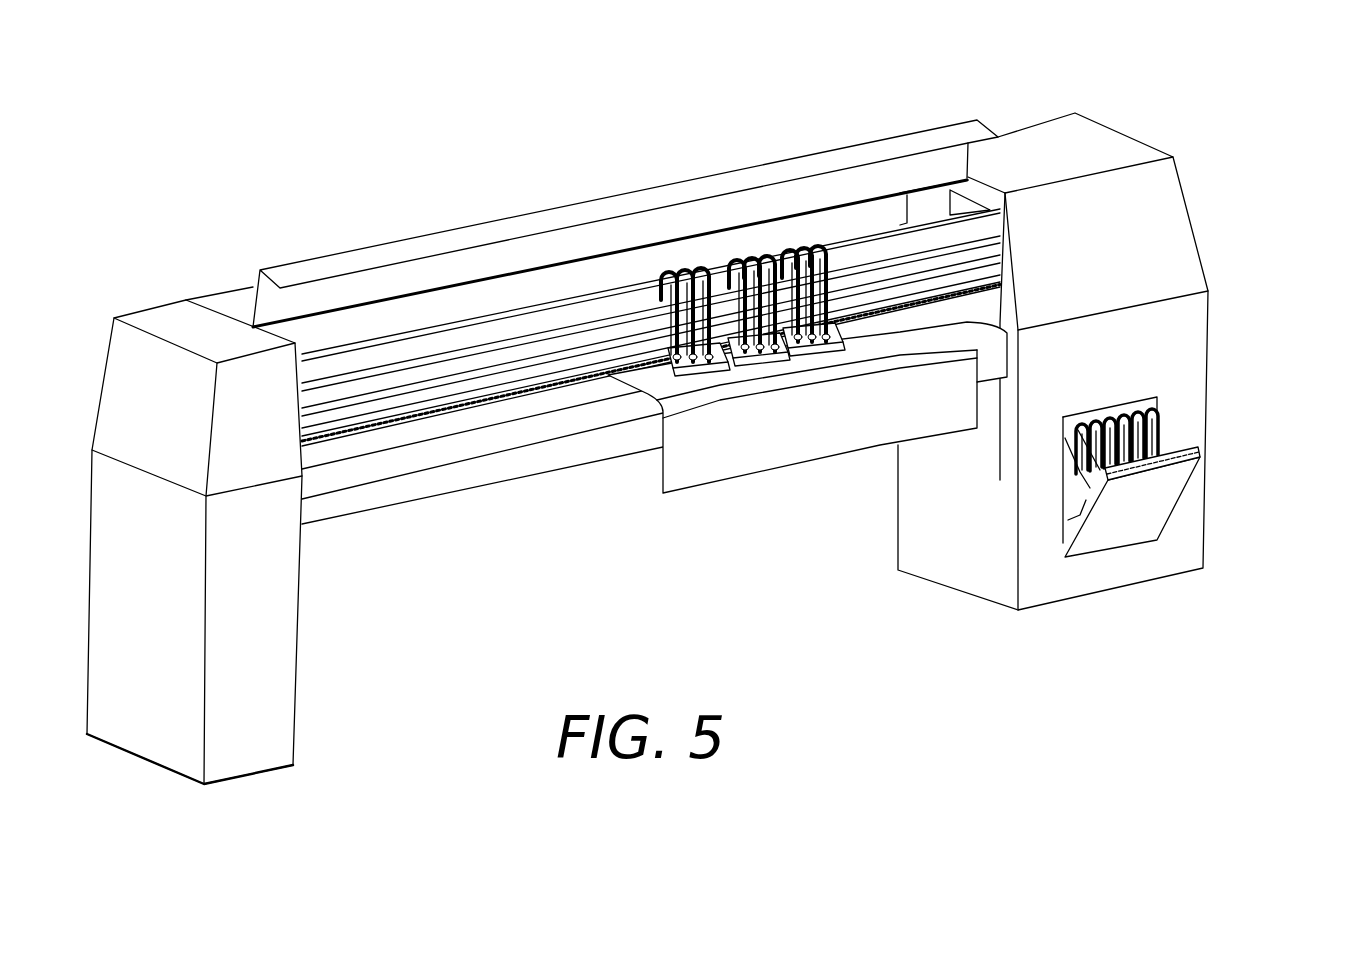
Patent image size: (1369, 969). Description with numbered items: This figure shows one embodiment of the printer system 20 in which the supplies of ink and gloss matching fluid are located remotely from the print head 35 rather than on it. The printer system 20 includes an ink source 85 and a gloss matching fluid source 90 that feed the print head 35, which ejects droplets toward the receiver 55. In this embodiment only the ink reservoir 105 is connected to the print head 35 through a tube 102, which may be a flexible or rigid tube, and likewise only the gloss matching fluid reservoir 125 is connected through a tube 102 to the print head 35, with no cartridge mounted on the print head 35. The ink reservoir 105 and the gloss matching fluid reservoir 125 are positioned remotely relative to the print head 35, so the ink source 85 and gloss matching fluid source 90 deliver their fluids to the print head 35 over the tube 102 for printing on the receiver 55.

The printer system 20 is at (362, 197).
The print head 35 is at (765, 353).
The receiver 55 is at (705, 473).
The ink source 85 is at (998, 220).
The gloss matching fluid source 90 is at (660, 167).
The tube 102 is at (650, 272).
The ink reservoir 105 is at (1065, 488).
The gloss matching fluid reservoir 125 is at (1182, 431).